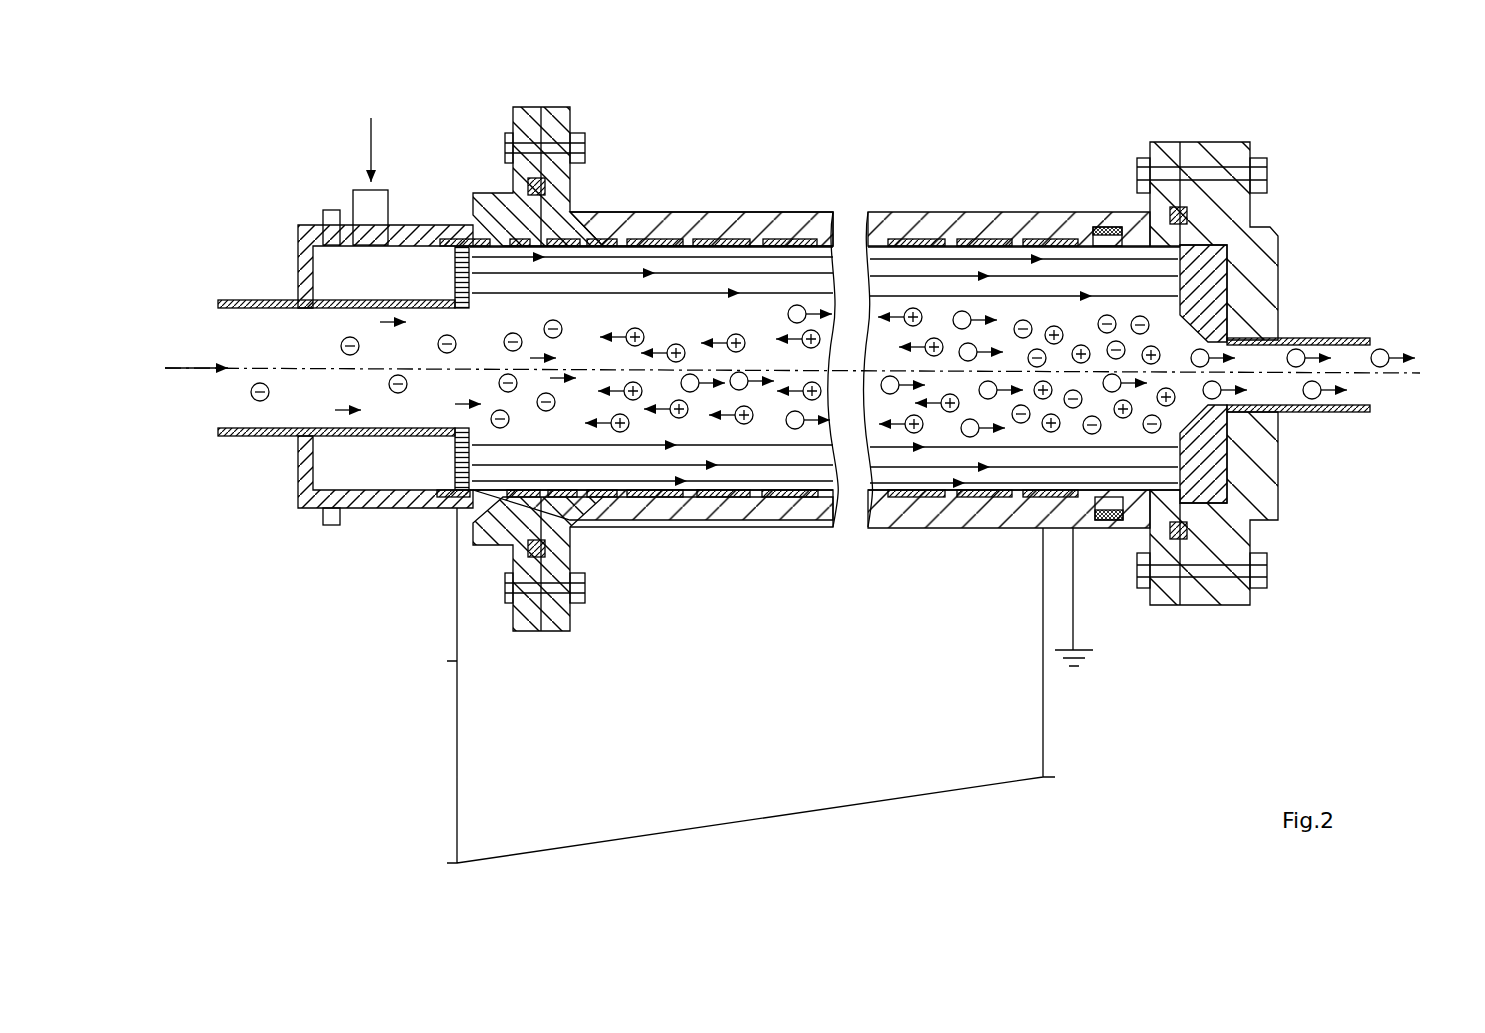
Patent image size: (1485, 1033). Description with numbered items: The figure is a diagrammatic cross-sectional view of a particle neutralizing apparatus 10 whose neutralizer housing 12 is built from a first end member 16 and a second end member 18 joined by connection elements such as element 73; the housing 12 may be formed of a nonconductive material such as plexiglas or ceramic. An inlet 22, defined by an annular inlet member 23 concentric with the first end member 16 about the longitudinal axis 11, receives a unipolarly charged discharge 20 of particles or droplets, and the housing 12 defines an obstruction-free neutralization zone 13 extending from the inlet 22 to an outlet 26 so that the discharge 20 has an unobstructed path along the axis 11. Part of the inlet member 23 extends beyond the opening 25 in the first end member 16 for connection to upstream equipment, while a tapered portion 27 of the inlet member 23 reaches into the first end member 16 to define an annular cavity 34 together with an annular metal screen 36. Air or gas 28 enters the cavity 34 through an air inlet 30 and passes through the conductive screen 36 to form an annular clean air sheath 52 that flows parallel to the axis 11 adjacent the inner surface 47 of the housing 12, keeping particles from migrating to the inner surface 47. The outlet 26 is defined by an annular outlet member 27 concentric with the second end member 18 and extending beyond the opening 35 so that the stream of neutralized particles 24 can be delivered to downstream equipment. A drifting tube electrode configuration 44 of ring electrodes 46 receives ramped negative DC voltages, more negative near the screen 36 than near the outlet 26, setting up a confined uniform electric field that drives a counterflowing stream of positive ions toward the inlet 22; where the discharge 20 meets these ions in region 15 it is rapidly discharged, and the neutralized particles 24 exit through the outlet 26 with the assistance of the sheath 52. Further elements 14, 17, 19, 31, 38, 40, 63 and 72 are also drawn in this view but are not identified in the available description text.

The particle neutralizing apparatus 10 is at (1048, 122).
The longitudinal axis 11 is at (305, 362).
The neutralizer housing 12 is at (936, 193).
The neutralization zone 13 is at (755, 305).
The tube wall 14 is at (690, 212).
The region 15 is at (553, 430).
The first end member 16 is at (410, 226).
The flange 17 is at (508, 148).
The second end member 18 is at (1279, 238).
The bolt 19 is at (1267, 172).
The charged discharge 20 is at (170, 366).
The inlet 22 is at (205, 420).
The annular inlet member 23 is at (238, 437).
The neutralized particles 24 is at (1425, 345).
The opening 25 is at (300, 300).
The outlet 26 is at (1402, 400).
The annular outlet member / tapered portion of inlet member 27 is at (372, 300).
The air or gas 28 is at (371, 128).
The air inlet 30 is at (352, 200).
The drift gas flow 31 is at (1033, 430).
The annular cavity 34 is at (357, 470).
The opening 35 is at (1292, 413).
The annular metal screen 36 is at (455, 285).
The collector electrode 38 is at (1108, 521).
The voltage supply 40 is at (1012, 822).
The drifting tube electrode configuration 44 is at (720, 234).
The ring electrodes 46 is at (515, 238).
The inner surface 47 is at (888, 498).
The annular clean air sheath 52 is at (752, 312).
The grounded electrode 63 is at (1115, 521).
The insulating gasket 72 is at (548, 187).
The connection element 73 is at (1172, 208).